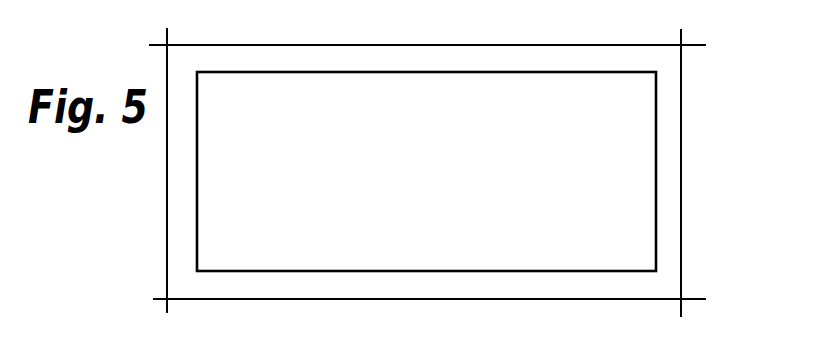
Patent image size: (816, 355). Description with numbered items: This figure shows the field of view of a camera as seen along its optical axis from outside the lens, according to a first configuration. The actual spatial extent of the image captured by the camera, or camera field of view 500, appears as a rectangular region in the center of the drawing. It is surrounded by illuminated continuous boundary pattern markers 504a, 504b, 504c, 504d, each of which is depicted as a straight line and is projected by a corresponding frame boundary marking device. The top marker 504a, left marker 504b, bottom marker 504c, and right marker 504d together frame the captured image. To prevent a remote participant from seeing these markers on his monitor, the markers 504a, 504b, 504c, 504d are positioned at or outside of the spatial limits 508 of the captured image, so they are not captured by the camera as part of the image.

The camera field of view 500 is at (418, 194).
The boundary pattern marker 504a is at (417, 45).
The boundary pattern marker 504b is at (167, 203).
The boundary pattern marker 504c is at (482, 299).
The boundary pattern marker 504d is at (738, 140).
The spatial limits of the captured image 508 is at (655, 215).